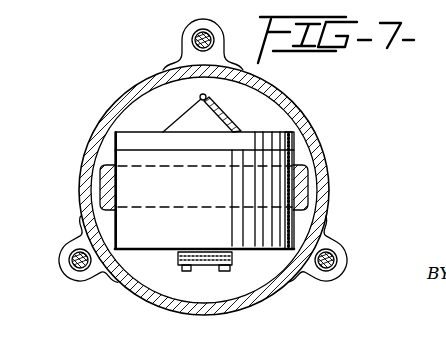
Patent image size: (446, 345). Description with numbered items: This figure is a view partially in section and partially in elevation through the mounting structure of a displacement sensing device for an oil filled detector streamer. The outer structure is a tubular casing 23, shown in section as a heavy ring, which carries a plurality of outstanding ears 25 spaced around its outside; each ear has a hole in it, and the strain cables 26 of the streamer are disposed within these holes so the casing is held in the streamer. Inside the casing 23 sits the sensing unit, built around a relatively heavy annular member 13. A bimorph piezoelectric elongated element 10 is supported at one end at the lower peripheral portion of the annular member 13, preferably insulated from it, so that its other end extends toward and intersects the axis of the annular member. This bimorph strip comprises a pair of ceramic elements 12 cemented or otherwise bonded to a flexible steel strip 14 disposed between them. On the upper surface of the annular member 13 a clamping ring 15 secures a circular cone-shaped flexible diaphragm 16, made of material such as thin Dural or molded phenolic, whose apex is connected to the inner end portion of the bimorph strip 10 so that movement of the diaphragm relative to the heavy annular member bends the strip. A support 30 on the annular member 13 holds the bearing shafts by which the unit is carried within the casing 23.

The bimorph piezoelectric elongated element 10 is at (196, 251).
The ceramic elements 12 is at (233, 259).
The annular member 13 is at (181, 192).
The flexible steel strip 14 is at (178, 258).
The clamping ring 15 is at (297, 137).
The circular cone-shaped flexible diaphragm 16 is at (226, 121).
The tubular casing 23 is at (294, 104).
The outstanding ears 25 is at (221, 26).
The strain cables 26 is at (192, 38).
The support 30 is at (309, 195).